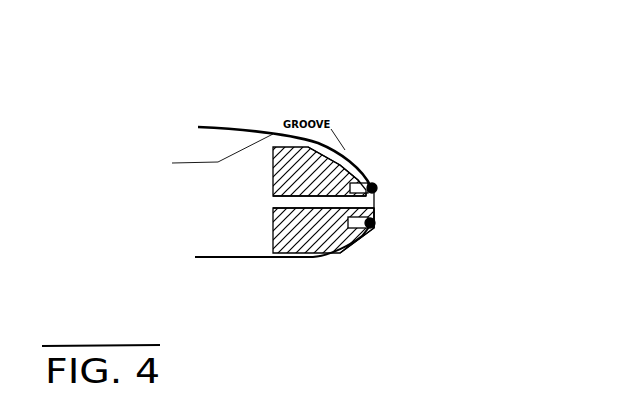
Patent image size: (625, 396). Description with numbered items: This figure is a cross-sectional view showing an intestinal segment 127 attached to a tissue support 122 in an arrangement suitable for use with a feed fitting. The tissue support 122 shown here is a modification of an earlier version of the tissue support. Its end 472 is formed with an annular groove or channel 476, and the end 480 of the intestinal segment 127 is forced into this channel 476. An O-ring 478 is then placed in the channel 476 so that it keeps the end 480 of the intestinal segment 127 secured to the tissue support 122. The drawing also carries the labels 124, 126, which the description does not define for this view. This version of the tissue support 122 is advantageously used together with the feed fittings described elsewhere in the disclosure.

The tissue support 122 is at (186, 103).
The electrode 124 is at (418, 191).
The electrode tip 126 is at (407, 187).
The intestinal segment 127 is at (217, 259).
The end of tissue support 472 is at (302, 243).
The annular groove or channel 476 is at (341, 194).
The O-ring 478 is at (380, 177).
The end of intestinal segment 480 is at (362, 206).